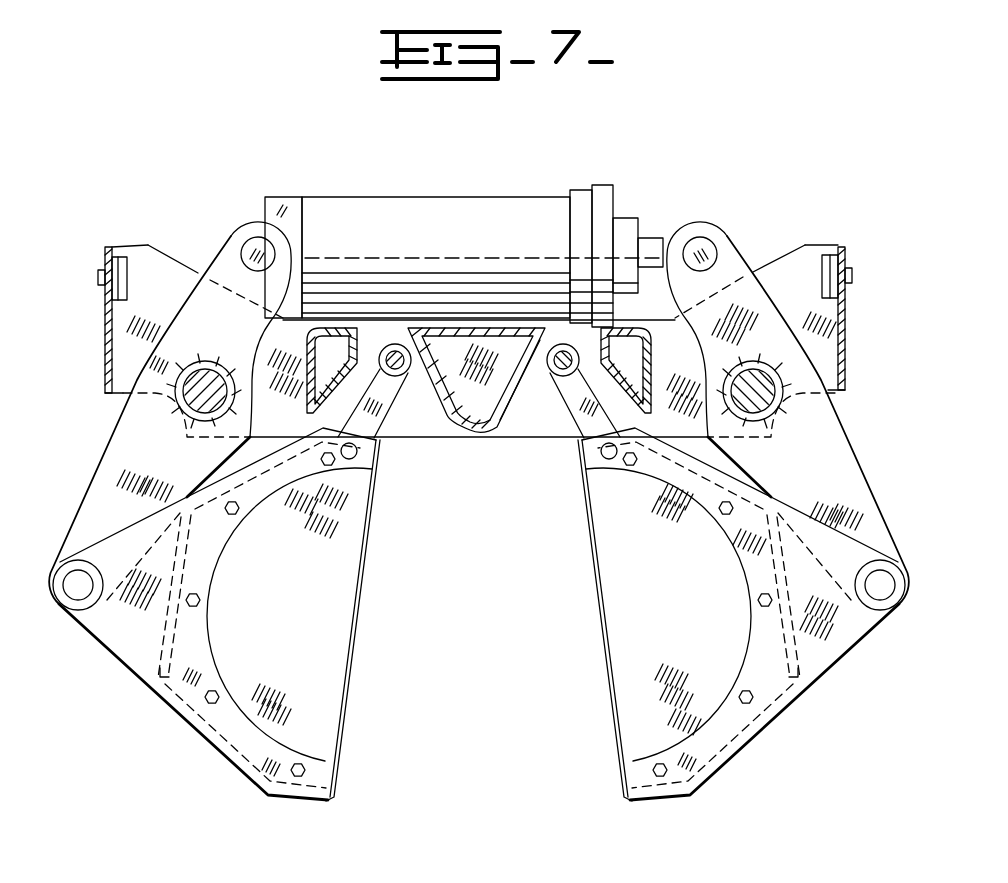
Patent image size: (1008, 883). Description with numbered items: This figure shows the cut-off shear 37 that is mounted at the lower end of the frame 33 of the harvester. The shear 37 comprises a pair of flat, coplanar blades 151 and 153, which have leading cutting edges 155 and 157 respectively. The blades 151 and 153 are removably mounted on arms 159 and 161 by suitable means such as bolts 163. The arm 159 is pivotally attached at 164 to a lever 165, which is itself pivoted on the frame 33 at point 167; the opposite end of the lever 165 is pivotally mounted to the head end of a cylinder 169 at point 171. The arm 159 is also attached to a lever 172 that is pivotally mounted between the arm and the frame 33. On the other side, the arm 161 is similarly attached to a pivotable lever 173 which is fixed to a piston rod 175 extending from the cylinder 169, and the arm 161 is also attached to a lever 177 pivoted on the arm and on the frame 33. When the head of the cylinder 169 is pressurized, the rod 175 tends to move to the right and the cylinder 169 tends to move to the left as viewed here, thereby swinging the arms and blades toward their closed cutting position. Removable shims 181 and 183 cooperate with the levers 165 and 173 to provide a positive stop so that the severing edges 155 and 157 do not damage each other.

The cut-off shear 37 is at (370, 818).
The frame 33 is at (108, 325).
The blade 151 is at (353, 567).
The blade 153 is at (600, 520).
The leading cutting edge 155 is at (350, 636).
The leading cutting edge 157 is at (603, 600).
The arm 159 is at (137, 663).
The arm 161 is at (820, 668).
The bolts 163 is at (200, 597).
The pivotal attachment 164 is at (80, 592).
The lever 165 is at (118, 414).
The pivot point 167 is at (218, 334).
The cylinder 169 is at (440, 200).
The pivot point 171 is at (250, 246).
The lever 172 is at (380, 427).
The pivotable lever 173 is at (846, 433).
The piston rod 175 is at (655, 240).
The lever 177 is at (580, 430).
The removable shim 181 is at (118, 258).
The removable shim 183 is at (826, 255).